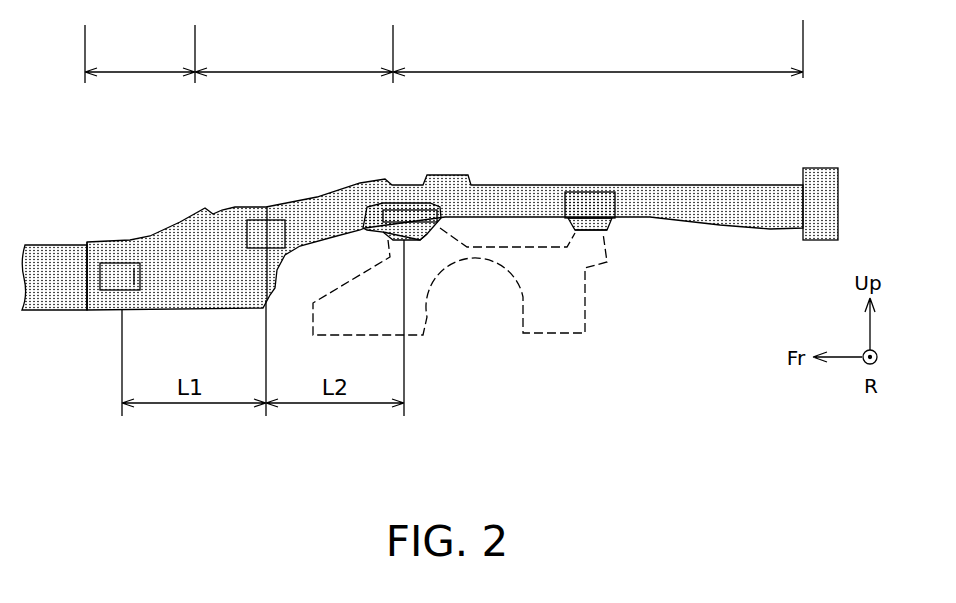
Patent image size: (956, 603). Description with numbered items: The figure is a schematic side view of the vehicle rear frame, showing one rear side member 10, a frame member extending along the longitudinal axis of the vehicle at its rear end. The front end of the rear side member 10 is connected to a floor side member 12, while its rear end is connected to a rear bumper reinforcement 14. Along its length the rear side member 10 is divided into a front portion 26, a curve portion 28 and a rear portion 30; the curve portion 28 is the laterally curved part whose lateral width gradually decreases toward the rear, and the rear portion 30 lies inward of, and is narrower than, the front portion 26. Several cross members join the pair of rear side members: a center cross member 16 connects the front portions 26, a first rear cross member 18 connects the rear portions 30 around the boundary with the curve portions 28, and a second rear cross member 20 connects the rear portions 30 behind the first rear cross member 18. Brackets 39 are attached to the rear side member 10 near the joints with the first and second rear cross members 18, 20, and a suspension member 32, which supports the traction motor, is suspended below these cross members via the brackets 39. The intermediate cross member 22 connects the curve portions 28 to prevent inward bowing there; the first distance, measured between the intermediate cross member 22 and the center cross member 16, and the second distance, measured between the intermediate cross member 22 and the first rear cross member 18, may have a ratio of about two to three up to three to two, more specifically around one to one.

The rear side member 10 is at (777, 185).
The floor side member 12 is at (60, 244).
The rear bumper reinforcement 14 is at (821, 168).
The center cross member 16 is at (120, 243).
The first rear cross member 18 is at (410, 185).
The second rear cross member 20 is at (589, 191).
The intermediate cross member 22 is at (272, 206).
The front portion 26 is at (140, 54).
The curve portion 28 is at (294, 54).
The rear portion 30 is at (598, 49).
The suspension member 32 is at (587, 297).
The bracket 39 is at (360, 229).